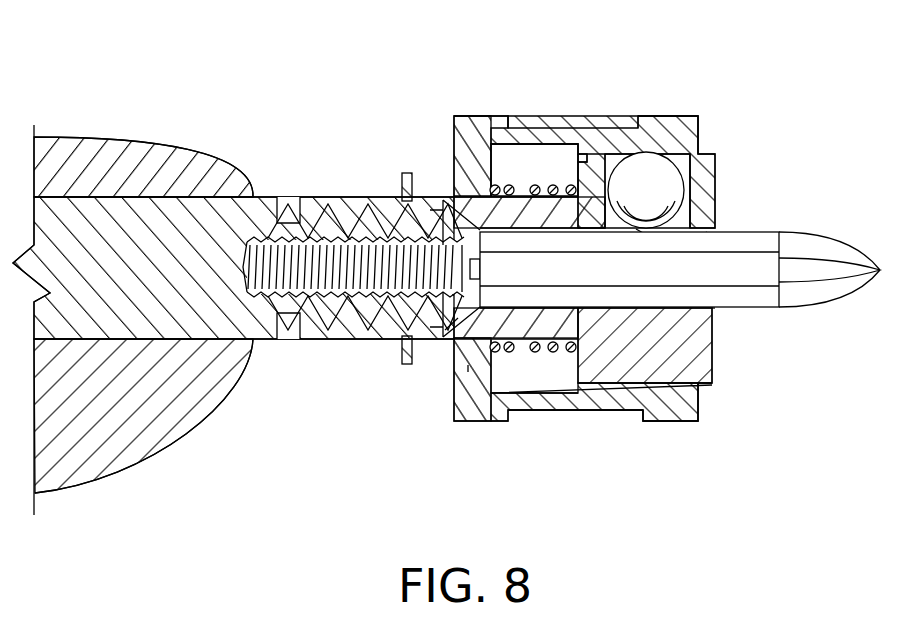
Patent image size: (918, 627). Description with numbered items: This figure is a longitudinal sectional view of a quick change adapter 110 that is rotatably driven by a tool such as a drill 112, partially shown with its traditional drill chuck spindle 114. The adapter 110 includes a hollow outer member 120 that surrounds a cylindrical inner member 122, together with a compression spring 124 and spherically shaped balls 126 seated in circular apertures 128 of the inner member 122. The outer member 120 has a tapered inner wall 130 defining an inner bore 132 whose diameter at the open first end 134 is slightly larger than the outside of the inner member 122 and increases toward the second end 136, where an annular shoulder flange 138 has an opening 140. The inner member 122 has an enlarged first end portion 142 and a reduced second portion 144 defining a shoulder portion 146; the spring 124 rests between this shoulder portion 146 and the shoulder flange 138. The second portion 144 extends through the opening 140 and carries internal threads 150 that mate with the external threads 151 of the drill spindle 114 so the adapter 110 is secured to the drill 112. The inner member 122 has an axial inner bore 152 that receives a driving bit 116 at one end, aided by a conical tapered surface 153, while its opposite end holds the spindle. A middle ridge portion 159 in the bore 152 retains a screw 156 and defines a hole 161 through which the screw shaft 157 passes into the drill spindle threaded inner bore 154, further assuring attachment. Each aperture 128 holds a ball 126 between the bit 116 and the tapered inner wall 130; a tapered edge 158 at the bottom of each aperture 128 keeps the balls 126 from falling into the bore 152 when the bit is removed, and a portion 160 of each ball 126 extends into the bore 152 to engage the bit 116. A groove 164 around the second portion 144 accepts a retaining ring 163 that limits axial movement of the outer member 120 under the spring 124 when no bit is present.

The quick change adapter 110 is at (613, 412).
The drill 112 is at (105, 428).
The drill chuck spindle 114 is at (187, 233).
The driving bit 116 is at (798, 270).
The outer member 120 is at (680, 125).
The inner member 122 is at (705, 178).
The compression spring 124 is at (556, 188).
The balls 126 is at (640, 170).
The apertures 128 is at (700, 150).
The tapered inner wall 130 is at (562, 180).
The inner bore 132 is at (515, 160).
The first end 134 is at (700, 385).
The second end 136 is at (498, 378).
The shoulder flange 138 is at (518, 157).
The opening 140 is at (455, 335).
The first end portion 142 is at (675, 363).
The second portion 144 is at (473, 365).
The shoulder portion 146 is at (578, 365).
The internal threads 150 is at (303, 350).
The external threads 151 is at (307, 217).
The inner bore 152 is at (480, 200).
The tapered surface 153 is at (720, 328).
The drill spindle threaded inner bore 154 is at (278, 240).
The screw 156 is at (462, 215).
The screw shaft 157 is at (346, 250).
The tapered edge 158 is at (713, 212).
The middle ridge portion 159 is at (450, 333).
The portion of the balls 160 is at (730, 232).
The hole 161 is at (400, 338).
The retaining ring 163 is at (404, 173).
The groove 164 is at (425, 325).